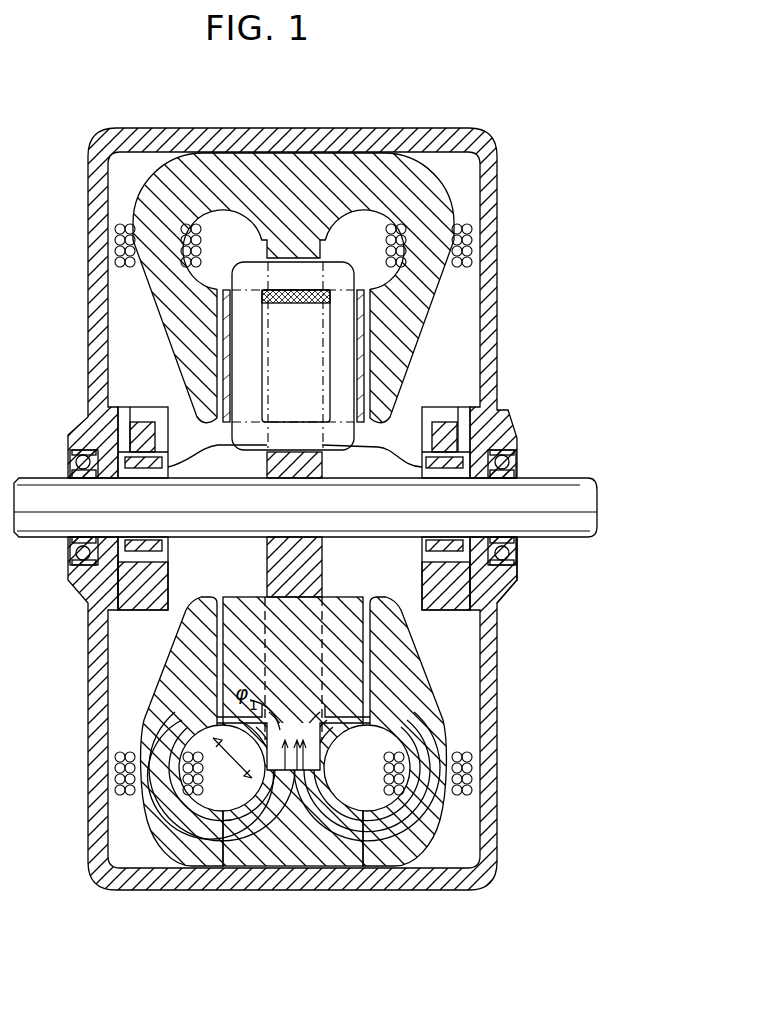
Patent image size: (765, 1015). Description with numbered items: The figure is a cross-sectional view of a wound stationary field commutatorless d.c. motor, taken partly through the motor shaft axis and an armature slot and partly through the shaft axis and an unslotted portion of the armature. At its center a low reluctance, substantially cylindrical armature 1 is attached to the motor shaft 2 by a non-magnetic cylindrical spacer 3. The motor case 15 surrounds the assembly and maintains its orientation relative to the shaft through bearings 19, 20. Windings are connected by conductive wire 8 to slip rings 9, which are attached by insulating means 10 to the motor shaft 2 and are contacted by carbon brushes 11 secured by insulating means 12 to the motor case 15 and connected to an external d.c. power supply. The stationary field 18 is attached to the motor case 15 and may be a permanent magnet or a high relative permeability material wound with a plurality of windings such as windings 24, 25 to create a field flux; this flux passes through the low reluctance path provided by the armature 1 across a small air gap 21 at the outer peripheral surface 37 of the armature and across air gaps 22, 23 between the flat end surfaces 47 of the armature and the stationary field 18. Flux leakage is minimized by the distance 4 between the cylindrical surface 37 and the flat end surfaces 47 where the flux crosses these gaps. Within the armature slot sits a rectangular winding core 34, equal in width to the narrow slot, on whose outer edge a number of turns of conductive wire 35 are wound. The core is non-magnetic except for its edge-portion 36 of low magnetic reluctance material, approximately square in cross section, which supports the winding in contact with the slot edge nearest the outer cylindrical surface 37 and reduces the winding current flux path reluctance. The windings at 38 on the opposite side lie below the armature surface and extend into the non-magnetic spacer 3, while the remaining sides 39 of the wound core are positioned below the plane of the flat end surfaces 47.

The armature 1 is at (345, 645).
The motor shaft 2 is at (597, 489).
The non-magnetic cylindrical spacer 3 is at (267, 560).
The distance 4 is at (220, 790).
The conductive wire 8 is at (388, 447).
The slip rings 9 is at (480, 590).
The insulating means 10 is at (487, 567).
The carbon brushes 11 is at (118, 407).
The insulating means 12 is at (135, 440).
The motor case 15 is at (497, 706).
The stationary field 18 is at (443, 817).
The bearing 19 is at (512, 564).
The bearing 20 is at (70, 455).
The air gap 21 is at (368, 713).
The air gap 22 is at (338, 805).
The air gap 23 is at (215, 745).
The winding 24 is at (473, 771).
The winding 25 is at (114, 776).
The rectangular winding core 34 is at (310, 385).
The conductive wire 35 is at (330, 277).
The low magnetic reluctance edge-portion 36 is at (317, 303).
The outer peripheral surface 37 is at (346, 372).
The windings 38 is at (340, 440).
The remaining sides 39 is at (247, 312).
The flat end surfaces 47 is at (222, 332).